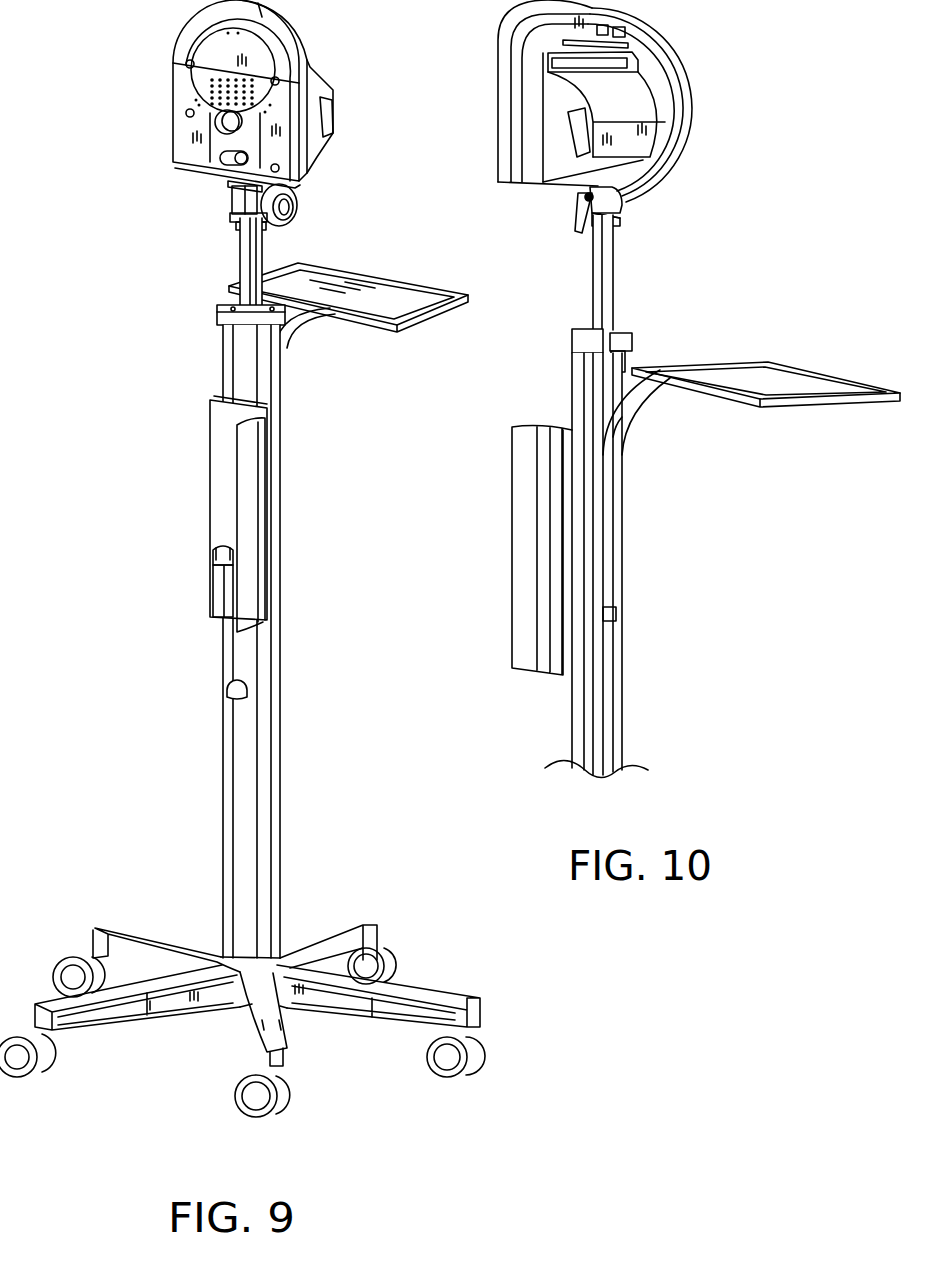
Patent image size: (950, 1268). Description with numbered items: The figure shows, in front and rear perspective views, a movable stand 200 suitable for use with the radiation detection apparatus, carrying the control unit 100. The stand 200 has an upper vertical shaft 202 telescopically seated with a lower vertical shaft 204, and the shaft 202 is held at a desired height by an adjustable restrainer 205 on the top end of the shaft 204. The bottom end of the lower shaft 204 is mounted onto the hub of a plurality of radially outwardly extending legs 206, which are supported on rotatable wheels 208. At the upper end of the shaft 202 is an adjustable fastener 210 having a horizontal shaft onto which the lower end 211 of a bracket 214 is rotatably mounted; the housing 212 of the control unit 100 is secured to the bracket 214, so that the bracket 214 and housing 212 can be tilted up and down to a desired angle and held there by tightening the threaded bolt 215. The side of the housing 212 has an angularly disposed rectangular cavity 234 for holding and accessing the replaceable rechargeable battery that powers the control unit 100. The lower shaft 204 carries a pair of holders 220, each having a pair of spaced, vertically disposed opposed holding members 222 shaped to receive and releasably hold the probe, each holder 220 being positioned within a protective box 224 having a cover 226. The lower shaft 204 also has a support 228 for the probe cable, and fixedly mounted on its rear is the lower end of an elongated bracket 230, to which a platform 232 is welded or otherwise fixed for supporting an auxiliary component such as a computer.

In FIG. 9, the control unit 100 is at (263, 94).
In FIG. 9, the movable stand 200 is at (205, 370).
In FIG. 10, the movable stand 200 is at (703, 335).
In FIG. 9, the upper vertical shaft 202 is at (250, 257).
In FIG. 10, the upper vertical shaft 202 is at (612, 277).
In FIG. 9, the lower vertical shaft 204 is at (220, 731).
In FIG. 10, the lower vertical shaft 204 is at (610, 753).
In FIG. 9, the adjustable restrainer 205 is at (223, 313).
In FIG. 10, the adjustable restrainer 205 is at (587, 340).
In FIG. 9, the legs 206 is at (330, 936).
In FIG. 9, the rotatable wheels 208 is at (440, 1056).
In FIG. 9, the adjustable fastener 210 is at (272, 238).
In FIG. 10, the adjustable fastener 210 is at (605, 222).
In FIG. 9, the lower end of bracket 211 is at (232, 200).
In FIG. 10, the lower end of bracket 211 is at (610, 208).
In FIG. 9, the housing 212 is at (172, 93).
In FIG. 10, the housing 212 is at (498, 95).
In FIG. 9, the bracket 214 is at (262, 183).
In FIG. 10, the bracket 214 is at (687, 108).
In FIG. 9, the threaded bolt 215 is at (293, 207).
In FIG. 10, the threaded bolt 215 is at (590, 198).
In FIG. 9, the holders 220 is at (212, 573).
In FIG. 9, the holding members 222 is at (227, 612).
In FIG. 9, the protective box 224 is at (217, 418).
In FIG. 10, the protective box 224 is at (567, 632).
In FIG. 9, the cover 226 is at (250, 478).
In FIG. 10, the cover 226 is at (522, 672).
In FIG. 9, the support 228 is at (227, 690).
In FIG. 9, the elongated bracket 230 is at (302, 332).
In FIG. 10, the elongated bracket 230 is at (648, 403).
In FIG. 9, the platform 232 is at (370, 295).
In FIG. 10, the platform 232 is at (783, 383).
In FIG. 9, the rectangular cavity 234 is at (327, 118).
In FIG. 10, the rectangular cavity 234 is at (583, 138).